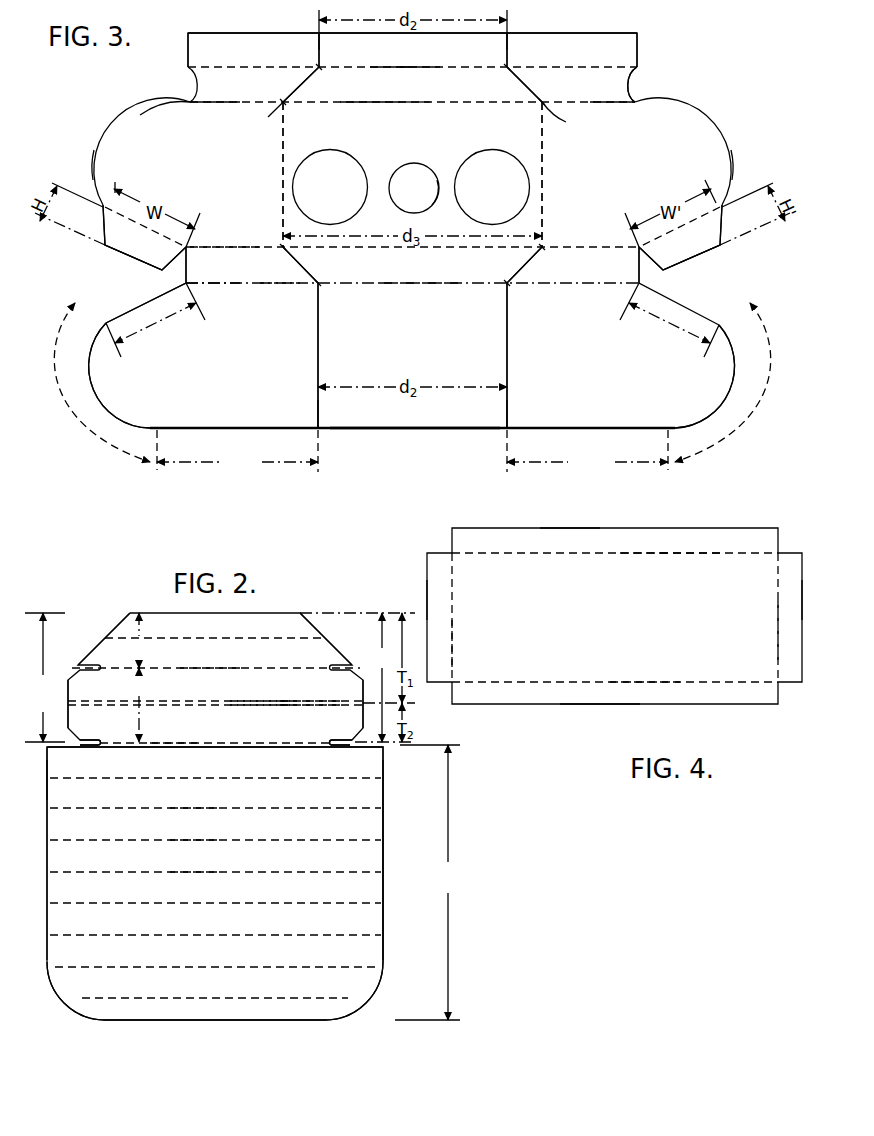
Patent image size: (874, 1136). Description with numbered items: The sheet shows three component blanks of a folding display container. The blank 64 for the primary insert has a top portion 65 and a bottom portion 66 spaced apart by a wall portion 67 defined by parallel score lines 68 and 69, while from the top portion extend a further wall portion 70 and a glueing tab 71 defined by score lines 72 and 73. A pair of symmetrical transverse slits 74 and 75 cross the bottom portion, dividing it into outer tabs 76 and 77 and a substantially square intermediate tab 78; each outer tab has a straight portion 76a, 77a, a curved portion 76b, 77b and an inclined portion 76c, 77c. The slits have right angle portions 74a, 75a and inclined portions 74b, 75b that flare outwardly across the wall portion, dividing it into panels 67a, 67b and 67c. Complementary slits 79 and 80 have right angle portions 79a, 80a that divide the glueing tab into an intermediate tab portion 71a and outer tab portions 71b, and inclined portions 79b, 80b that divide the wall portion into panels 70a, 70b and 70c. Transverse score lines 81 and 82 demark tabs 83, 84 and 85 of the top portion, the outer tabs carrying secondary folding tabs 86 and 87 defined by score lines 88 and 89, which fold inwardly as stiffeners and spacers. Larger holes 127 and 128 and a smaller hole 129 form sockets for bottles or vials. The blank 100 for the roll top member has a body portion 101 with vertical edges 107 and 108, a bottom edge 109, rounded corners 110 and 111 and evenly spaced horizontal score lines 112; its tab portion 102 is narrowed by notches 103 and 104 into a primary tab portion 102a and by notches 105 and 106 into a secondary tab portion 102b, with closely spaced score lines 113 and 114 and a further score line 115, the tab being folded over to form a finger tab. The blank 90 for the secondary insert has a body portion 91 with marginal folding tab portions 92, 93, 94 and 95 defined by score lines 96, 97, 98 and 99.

In FIG. 3, the blank 64 is at (382, 433).
In FIG. 3, the top portion 65 is at (125, 109).
In FIG. 3, the bottom portion 66 is at (113, 412).
In FIG. 3, the wall portion 67 is at (196, 266).
In FIG. 3, the panel 67a is at (427, 268).
In FIG. 3, the panel 67b is at (628, 267).
In FIG. 3, the panel 67c is at (215, 282).
In FIG. 3, the score line 68 is at (285, 288).
In FIG. 3, the score line 69 is at (218, 246).
In FIG. 3, the wall portion 70 is at (628, 92).
In FIG. 3, the panel 70a is at (368, 96).
In FIG. 3, the panel 70b is at (592, 97).
In FIG. 3, the panel 70c is at (218, 94).
In FIG. 3, the glueing tab 71 is at (628, 56).
In FIG. 3, the intermediate tab portion 71a is at (432, 50).
In FIG. 3, the outer tab portions 71b is at (223, 24).
In FIG. 3, the score line 72 is at (415, 104).
In FIG. 3, the score line 73 is at (384, 68).
In FIG. 3, the slit 74 is at (317, 342).
In FIG. 3, the right angle transverse portion 74a is at (318, 405).
In FIG. 3, the inclined transverse portion 74b is at (300, 265).
In FIG. 3, the slit 75 is at (508, 342).
In FIG. 3, the right angle transverse portion 75a is at (507, 403).
In FIG. 3, the inclined transverse portion 75b is at (530, 258).
In FIG. 3, the outer tab 76 is at (97, 358).
In FIG. 3, the straight portion 76a is at (237, 462).
In FIG. 3, the curved portion 76b is at (97, 382).
In FIG. 3, the inclined portion 76c is at (155, 320).
In FIG. 3, the outer tab 77 is at (692, 407).
In FIG. 3, the straight portion 77a is at (587, 462).
In FIG. 3, the curved portion 77b is at (732, 382).
In FIG. 3, the inclined portion 77c is at (669, 320).
In FIG. 3, the intermediate tab 78 is at (433, 413).
In FIG. 3, the slit 79 is at (318, 63).
In FIG. 3, the slit portion 79a is at (320, 47).
In FIG. 3, the inclined slit portion 79b is at (300, 82).
In FIG. 3, the slit 80 is at (509, 68).
In FIG. 3, the slit portion 80a is at (508, 48).
In FIG. 3, the inclined slit portion 80b is at (522, 78).
In FIG. 3, the transverse score line 81 is at (282, 193).
In FIG. 3, the transverse score line 82 is at (542, 189).
In FIG. 3, the outer tab 83 is at (100, 156).
In FIG. 3, the tab 84 is at (428, 171).
In FIG. 3, the outer tab 85 is at (705, 148).
In FIG. 3, the secondary folding tab 86 is at (110, 245).
In FIG. 3, the secondary folding tab 87 is at (695, 252).
In FIG. 3, the score line 88 is at (123, 211).
In FIG. 3, the score line 89 is at (680, 224).
In FIG. 3, the larger hole 127 is at (318, 136).
In FIG. 3, the larger hole 128 is at (480, 153).
In FIG. 3, the smaller hole 129 is at (437, 183).
In FIG. 2, the blank 100 is at (143, 1026).
In FIG. 2, the body portion 101 is at (46, 869).
In FIG. 2, the tab portion 102 is at (58, 703).
In FIG. 2, the primary tab portion 102a is at (145, 705).
In FIG. 2, the secondary tab portion 102b is at (145, 640).
In FIG. 2, the notch 103 is at (100, 730).
In FIG. 2, the notch 104 is at (343, 744).
In FIG. 2, the notch 105 is at (78, 663).
In FIG. 2, the notch 106 is at (350, 665).
In FIG. 2, the vertical edge 107 is at (48, 790).
In FIG. 2, the vertical edge 108 is at (385, 835).
In FIG. 2, the bottom edge 109 is at (227, 1022).
In FIG. 2, the rounded bottom corner 110 is at (73, 1000).
In FIG. 2, the rounded bottom corner 111 is at (343, 1007).
In FIG. 2, the horizontal score lines 112 is at (172, 745).
In FIG. 2, the horizontal score line 113 is at (295, 705).
In FIG. 2, the horizontal score line 114 is at (247, 704).
In FIG. 2, the horizontal score line 115 is at (206, 668).
In FIG. 4, the blank 90 is at (506, 705).
In FIG. 4, the body portion 91 is at (690, 565).
In FIG. 4, the marginal folding tab portion 92 is at (597, 697).
In FIG. 4, the marginal folding tab portion 93 is at (434, 597).
In FIG. 4, the marginal folding tab portion 94 is at (572, 538).
In FIG. 4, the marginal folding tab portion 95 is at (788, 593).
In FIG. 4, the score line 96 is at (640, 682).
In FIG. 4, the score line 97 is at (453, 642).
In FIG. 4, the score line 98 is at (643, 552).
In FIG. 4, the score line 99 is at (777, 628).